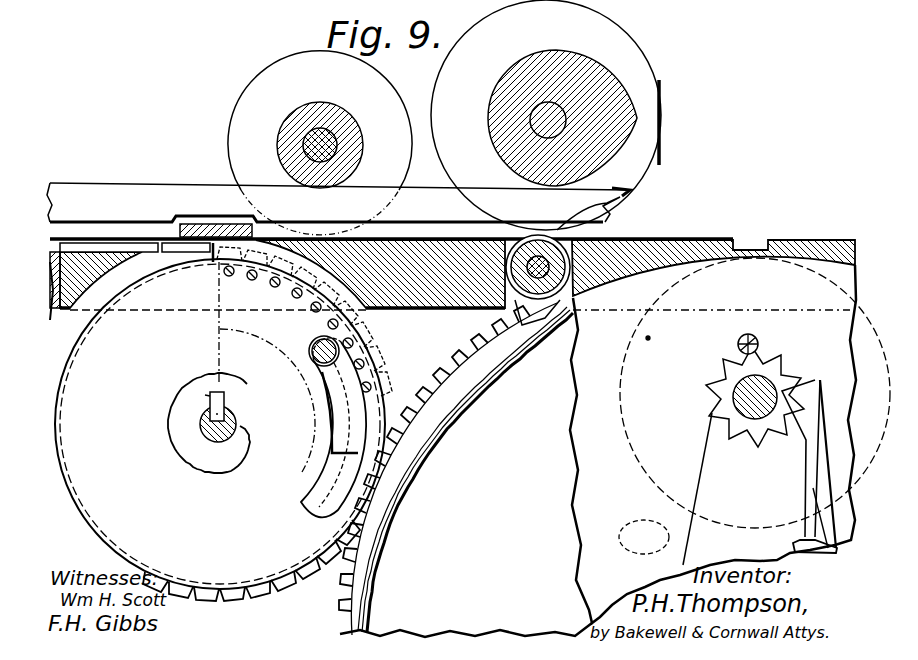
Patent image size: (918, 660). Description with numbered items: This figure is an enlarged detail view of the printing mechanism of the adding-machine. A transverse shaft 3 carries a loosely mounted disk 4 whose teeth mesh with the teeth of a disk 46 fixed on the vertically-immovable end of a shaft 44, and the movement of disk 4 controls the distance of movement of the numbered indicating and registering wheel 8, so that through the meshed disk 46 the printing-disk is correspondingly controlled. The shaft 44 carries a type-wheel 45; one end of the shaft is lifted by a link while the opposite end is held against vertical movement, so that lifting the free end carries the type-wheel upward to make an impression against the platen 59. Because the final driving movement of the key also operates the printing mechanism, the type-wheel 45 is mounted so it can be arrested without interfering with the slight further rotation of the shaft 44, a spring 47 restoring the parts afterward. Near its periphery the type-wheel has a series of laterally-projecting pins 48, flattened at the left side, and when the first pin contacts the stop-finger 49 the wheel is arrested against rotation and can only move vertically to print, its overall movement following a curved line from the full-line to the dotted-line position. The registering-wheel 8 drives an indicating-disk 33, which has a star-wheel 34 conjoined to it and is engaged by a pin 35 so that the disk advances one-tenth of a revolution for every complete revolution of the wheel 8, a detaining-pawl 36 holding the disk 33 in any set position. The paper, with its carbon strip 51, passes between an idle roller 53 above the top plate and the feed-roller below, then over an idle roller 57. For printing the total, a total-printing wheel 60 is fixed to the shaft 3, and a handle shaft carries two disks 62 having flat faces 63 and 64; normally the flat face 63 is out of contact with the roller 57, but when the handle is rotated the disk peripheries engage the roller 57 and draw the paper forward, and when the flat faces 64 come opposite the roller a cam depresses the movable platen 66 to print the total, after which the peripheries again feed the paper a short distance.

The transverse shaft 3 is at (757, 402).
The disk 4 is at (340, 597).
The indicating and registering wheel 8 is at (730, 440).
The indicating-disk 33 is at (660, 497).
The star-wheel 34 is at (714, 390).
The pin 35 is at (746, 342).
The detaining-pawl 36 is at (820, 382).
The shaft 44 is at (218, 440).
The type-wheel 45 is at (220, 424).
The disk 46 is at (267, 590).
The spring 47 is at (191, 384).
The laterally-projecting pins 48 is at (258, 283).
The stop-finger 49 is at (176, 247).
The carbon strip 51 is at (700, 240).
The idle roller 53 is at (277, 84).
The idle roller 57 is at (532, 300).
The platen 59 is at (203, 227).
The total-printing wheel 60 is at (466, 472).
The disks 62 is at (588, 30).
The flat face 63 is at (620, 206).
The flat face 64 is at (663, 122).
The movable platen 66 is at (338, 202).